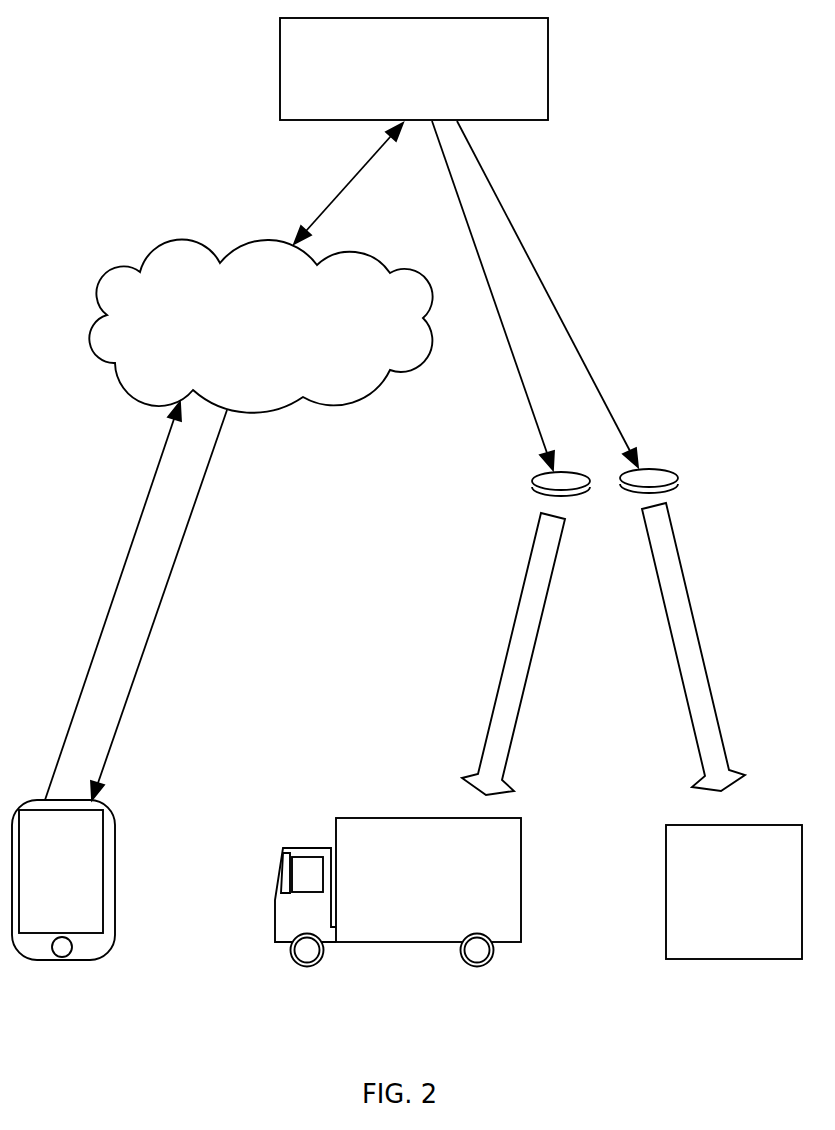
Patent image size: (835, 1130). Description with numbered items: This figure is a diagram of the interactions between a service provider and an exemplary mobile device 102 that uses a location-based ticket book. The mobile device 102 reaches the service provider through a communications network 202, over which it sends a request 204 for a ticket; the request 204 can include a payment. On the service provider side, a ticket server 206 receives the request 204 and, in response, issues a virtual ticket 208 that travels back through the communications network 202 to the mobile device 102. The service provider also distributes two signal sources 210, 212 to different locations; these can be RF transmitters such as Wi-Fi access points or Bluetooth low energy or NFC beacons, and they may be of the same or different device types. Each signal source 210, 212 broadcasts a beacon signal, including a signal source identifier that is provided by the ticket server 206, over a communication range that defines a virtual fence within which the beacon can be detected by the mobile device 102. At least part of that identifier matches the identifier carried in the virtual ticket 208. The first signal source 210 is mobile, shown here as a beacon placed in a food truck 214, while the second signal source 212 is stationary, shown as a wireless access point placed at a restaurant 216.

The mobile device 102 is at (115, 845).
The communications network 202 is at (147, 258).
The request 204 is at (90, 657).
The ticket server 206 is at (277, 69).
The virtual ticket 208 is at (193, 515).
The signal source 210 is at (530, 482).
The signal source 212 is at (678, 480).
The food truck 214 is at (413, 816).
The restaurant 216 is at (666, 842).